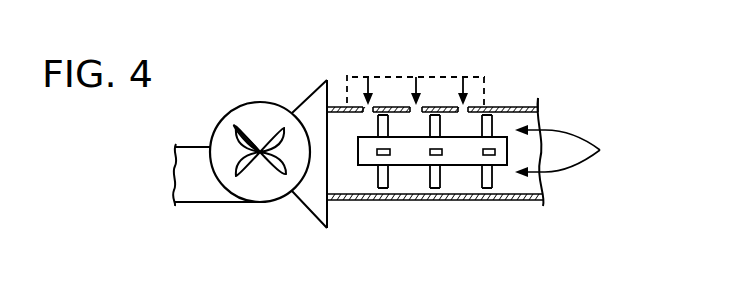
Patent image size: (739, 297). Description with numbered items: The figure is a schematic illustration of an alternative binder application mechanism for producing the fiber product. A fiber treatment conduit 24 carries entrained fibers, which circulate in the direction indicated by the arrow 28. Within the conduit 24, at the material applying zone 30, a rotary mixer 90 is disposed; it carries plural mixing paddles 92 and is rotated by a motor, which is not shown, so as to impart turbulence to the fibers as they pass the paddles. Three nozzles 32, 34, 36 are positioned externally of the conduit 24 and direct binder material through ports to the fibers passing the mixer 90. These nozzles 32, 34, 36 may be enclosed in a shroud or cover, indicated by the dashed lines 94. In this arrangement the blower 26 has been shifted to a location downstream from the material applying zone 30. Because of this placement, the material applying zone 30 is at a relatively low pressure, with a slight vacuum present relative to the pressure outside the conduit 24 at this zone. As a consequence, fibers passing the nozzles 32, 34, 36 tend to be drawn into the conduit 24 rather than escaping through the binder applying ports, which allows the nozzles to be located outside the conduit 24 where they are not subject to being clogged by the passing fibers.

The fiber treatment conduit 24 is at (510, 210).
The blower 26 is at (228, 112).
The arrow 28 is at (572, 151).
The material applying zone 30 is at (513, 105).
The nozzle 32 is at (370, 78).
The nozzle 34 is at (418, 78).
The nozzle 36 is at (465, 78).
The rotary mixer 90 is at (408, 173).
The mixing paddles 92 is at (380, 158).
The shroud 94 is at (351, 74).